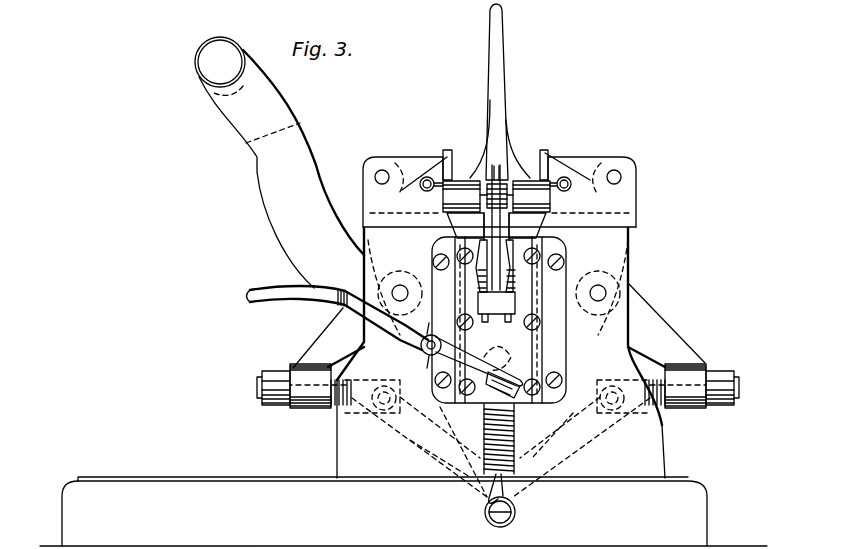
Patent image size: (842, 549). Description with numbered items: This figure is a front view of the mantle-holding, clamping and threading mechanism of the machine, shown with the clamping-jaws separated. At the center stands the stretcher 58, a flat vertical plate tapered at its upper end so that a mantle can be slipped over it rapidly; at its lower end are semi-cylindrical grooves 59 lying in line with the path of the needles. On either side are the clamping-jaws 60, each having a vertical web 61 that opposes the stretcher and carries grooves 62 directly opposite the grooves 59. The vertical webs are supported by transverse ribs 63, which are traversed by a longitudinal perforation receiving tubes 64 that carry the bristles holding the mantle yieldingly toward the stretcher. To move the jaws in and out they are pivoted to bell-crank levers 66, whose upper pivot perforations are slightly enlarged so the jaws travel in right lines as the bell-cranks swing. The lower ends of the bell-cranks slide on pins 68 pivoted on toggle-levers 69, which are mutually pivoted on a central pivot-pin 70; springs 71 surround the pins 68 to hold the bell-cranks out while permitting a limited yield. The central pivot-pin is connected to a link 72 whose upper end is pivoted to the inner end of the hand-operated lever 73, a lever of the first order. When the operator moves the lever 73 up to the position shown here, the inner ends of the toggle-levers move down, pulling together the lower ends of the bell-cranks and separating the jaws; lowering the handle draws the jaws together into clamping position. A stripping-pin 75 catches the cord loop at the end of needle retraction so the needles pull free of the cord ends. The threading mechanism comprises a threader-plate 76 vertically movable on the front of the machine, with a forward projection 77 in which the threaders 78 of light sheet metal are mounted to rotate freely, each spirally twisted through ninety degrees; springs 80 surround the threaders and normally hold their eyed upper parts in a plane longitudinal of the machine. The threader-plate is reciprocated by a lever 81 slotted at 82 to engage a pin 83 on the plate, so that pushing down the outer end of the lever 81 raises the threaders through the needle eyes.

The stretcher 58 is at (500, 43).
The semi-cylindrical grooves 59 is at (490, 102).
The clamping-jaws 60 is at (443, 172).
The vertical web 61 is at (447, 150).
The grooves 62 is at (488, 170).
The transverse ribs 63 is at (417, 160).
The tubes 64 is at (636, 206).
The bell-crank lever 66 is at (323, 348).
The pins 68 is at (260, 388).
The toggle-levers 69 is at (457, 463).
The central pivot-pin 70 is at (512, 497).
The springs 71 is at (338, 408).
The link 72 is at (460, 428).
The hand-operated lever 73 is at (272, 205).
The stripping-pin 75 is at (465, 226).
The threader-plate 76 is at (512, 343).
The forward projection 77 is at (500, 346).
The threaders 78 is at (527, 226).
The springs 80 is at (495, 243).
The lever 81 is at (406, 338).
The slot 82 is at (525, 383).
The pin 83 is at (507, 407).